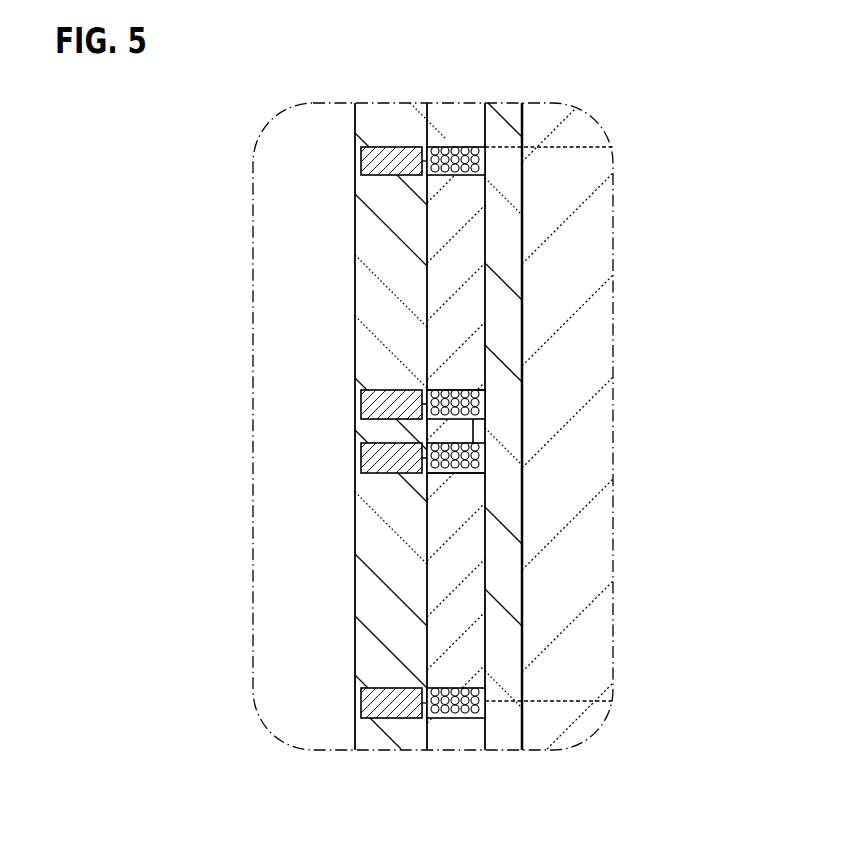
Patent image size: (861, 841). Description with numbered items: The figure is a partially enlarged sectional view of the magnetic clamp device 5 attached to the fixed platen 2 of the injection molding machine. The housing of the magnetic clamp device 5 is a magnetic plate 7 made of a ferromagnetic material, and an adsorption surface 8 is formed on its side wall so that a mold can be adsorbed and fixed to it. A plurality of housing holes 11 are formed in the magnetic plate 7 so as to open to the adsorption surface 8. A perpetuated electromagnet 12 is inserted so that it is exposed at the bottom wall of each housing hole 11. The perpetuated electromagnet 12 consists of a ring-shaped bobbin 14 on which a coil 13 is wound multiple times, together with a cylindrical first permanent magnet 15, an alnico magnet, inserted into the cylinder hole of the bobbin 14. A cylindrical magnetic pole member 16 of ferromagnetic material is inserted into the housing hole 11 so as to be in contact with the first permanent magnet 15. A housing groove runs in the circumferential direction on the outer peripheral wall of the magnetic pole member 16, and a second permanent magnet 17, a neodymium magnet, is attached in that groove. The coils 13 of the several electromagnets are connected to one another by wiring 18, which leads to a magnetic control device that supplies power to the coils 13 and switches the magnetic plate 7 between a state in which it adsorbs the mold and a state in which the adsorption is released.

The fixed platen 2 is at (575, 185).
The magnetic clamp device 5 is at (443, 103).
The magnetic plate 7 is at (462, 720).
The adsorption surface 8 is at (362, 323).
The housing hole 11 is at (386, 147).
The perpetuated electromagnet 12 is at (488, 262).
The coil 13 is at (485, 413).
The bobbin 14 is at (463, 390).
The first permanent magnet 15 is at (466, 318).
The magnetic pole member 16 is at (362, 271).
The second permanent magnet 17 is at (362, 412).
The wiring 18 is at (566, 147).